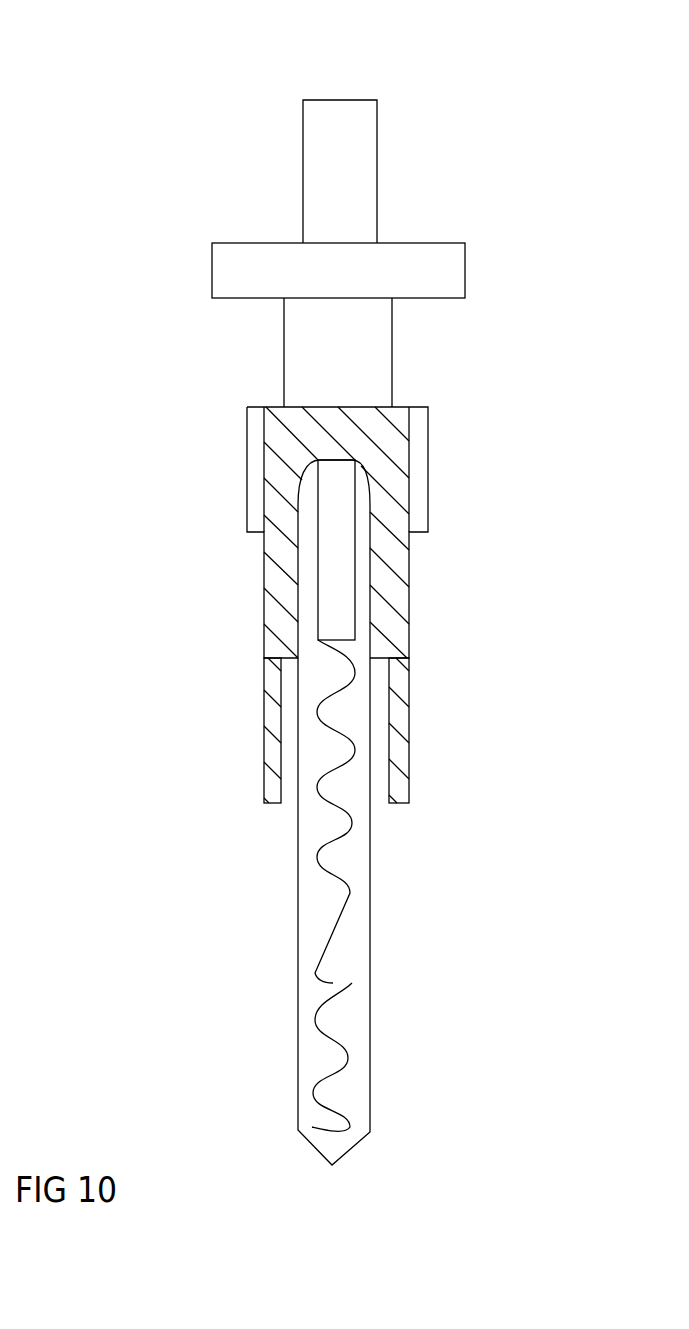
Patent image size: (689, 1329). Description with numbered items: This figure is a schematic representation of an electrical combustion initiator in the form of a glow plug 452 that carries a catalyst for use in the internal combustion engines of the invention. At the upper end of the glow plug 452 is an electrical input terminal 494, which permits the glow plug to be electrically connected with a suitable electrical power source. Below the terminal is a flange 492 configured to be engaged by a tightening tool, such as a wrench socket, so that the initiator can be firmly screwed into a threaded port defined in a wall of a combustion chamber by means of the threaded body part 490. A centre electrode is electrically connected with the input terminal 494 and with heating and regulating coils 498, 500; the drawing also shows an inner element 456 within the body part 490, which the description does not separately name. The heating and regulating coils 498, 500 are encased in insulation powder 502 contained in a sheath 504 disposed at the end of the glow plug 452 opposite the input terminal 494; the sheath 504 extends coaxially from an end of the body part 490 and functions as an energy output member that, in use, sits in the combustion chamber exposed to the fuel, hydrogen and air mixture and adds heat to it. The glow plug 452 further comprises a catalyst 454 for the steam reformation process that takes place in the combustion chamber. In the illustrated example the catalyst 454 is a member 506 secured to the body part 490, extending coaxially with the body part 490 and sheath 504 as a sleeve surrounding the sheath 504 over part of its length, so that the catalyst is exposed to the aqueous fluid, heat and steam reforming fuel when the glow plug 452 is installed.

The glow plug 452 is at (167, 89).
The electrical input terminal 494 is at (315, 172).
The flange 492 is at (229, 273).
The threaded body part 490 is at (253, 440).
The plunger rod 456 is at (328, 548).
The catalyst 454 is at (236, 739).
The member 506 is at (408, 765).
The insulation powder 502 is at (352, 875).
The sheath 504 is at (295, 983).
The heating coil 498 is at (333, 883).
The regulating coil 500 is at (323, 1040).